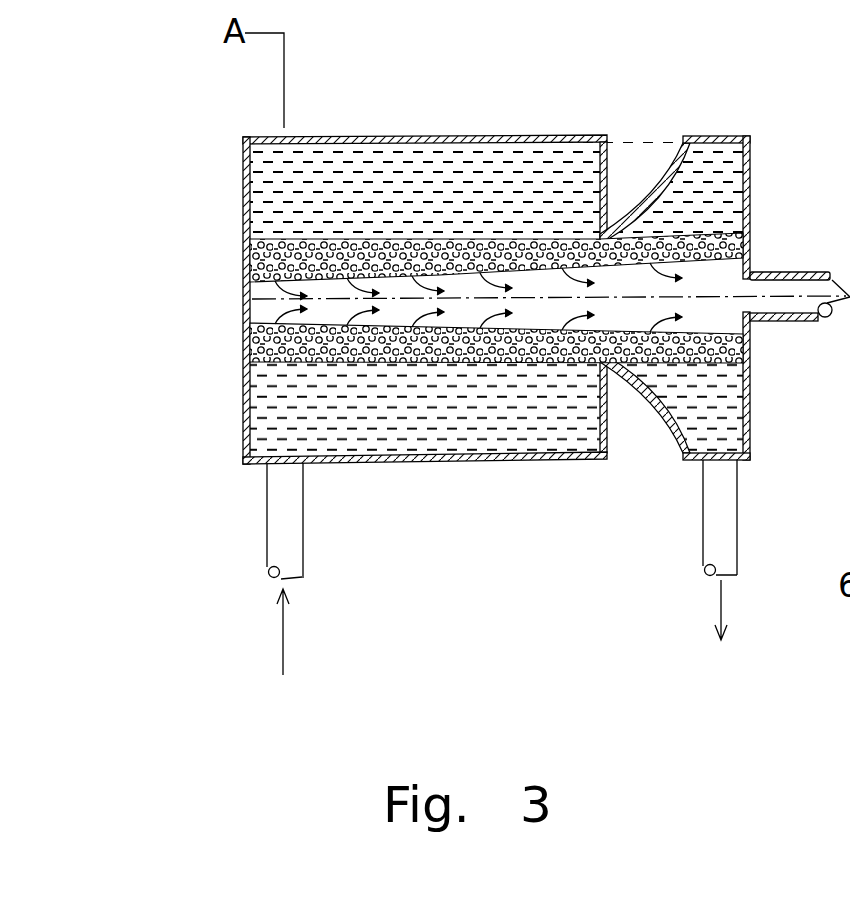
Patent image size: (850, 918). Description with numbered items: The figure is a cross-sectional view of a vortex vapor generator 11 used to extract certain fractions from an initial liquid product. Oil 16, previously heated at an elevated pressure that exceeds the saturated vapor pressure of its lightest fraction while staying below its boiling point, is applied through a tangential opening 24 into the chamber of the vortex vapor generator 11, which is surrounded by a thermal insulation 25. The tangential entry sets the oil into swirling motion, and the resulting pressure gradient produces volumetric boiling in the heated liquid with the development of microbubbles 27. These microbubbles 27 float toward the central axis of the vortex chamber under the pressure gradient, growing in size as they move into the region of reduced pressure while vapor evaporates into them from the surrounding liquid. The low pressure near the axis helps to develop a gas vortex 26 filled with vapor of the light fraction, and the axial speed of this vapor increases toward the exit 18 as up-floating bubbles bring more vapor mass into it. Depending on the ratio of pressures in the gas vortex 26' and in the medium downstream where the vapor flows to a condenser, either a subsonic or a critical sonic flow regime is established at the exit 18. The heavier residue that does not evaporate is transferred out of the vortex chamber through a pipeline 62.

The vortex vapor generator 11 is at (483, 135).
The oil 16 is at (297, 437).
The exit 18 is at (758, 288).
The tangential opening 24 is at (282, 552).
The thermal insulation 25 is at (377, 461).
The gas vortex 26 is at (435, 365).
The gas vortex 26' is at (551, 354).
The microbubbles 27 is at (250, 248).
The pipeline 62 is at (722, 545).